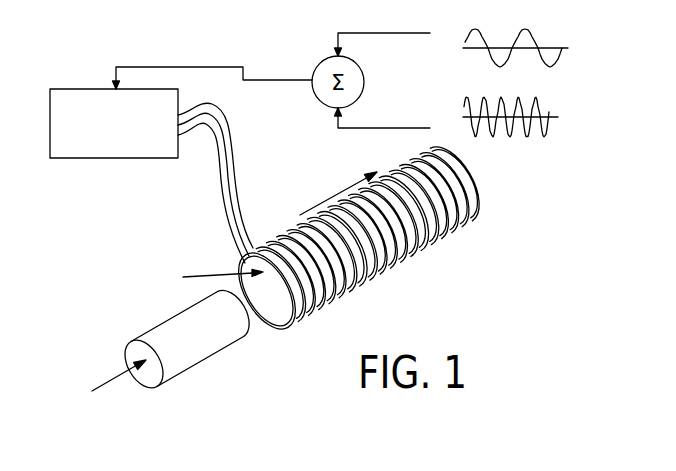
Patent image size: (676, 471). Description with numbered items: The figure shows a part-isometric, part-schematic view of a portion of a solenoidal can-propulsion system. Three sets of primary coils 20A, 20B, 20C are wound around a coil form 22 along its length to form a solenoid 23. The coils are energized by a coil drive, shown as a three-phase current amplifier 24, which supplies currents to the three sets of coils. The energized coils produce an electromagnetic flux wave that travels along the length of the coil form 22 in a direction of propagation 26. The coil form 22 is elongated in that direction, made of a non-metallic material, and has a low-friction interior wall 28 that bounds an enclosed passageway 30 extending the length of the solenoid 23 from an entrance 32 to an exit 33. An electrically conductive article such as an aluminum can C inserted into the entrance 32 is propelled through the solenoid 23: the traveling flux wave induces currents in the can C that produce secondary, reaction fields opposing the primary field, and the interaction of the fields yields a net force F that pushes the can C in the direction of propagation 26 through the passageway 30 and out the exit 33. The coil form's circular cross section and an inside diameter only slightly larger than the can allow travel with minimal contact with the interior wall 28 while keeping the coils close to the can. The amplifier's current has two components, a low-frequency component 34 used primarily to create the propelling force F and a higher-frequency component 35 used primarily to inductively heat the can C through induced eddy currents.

The three-phase current amplifier 24 is at (84, 89).
The direction of propagation 26 is at (338, 193).
The enclosed passageway 30 is at (210, 275).
The entrance 32 is at (258, 318).
The low-friction interior wall 28 is at (268, 313).
The coil form 22 is at (391, 266).
The first set of primary coils 20A is at (377, 272).
The second set of primary coils 20B is at (388, 268).
The third set of primary coils 20C is at (389, 250).
The solenoid 23 is at (462, 221).
The exit 33 is at (483, 202).
The low-frequency component 34 is at (480, 29).
The higher-frequency component 35 is at (537, 107).
The aluminum can C is at (172, 322).
The net force F is at (103, 383).